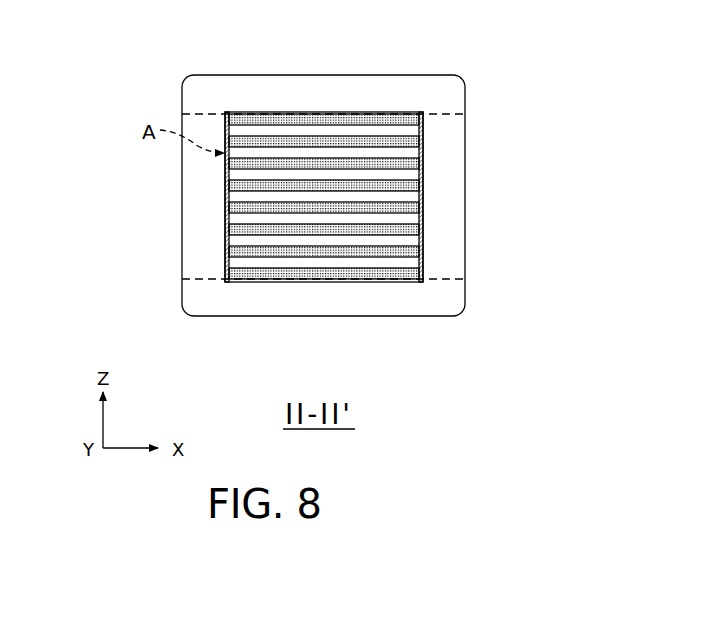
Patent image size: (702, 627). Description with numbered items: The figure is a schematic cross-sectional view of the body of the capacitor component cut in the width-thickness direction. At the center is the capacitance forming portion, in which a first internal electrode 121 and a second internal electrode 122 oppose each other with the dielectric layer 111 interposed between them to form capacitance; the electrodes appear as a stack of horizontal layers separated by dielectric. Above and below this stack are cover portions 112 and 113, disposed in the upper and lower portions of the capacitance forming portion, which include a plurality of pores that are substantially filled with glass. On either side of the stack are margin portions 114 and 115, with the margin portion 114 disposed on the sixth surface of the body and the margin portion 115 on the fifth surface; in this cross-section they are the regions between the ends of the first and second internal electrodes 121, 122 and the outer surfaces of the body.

The dielectric layer 111 is at (253, 130).
The cover portion 112 is at (310, 95).
The cover portion 113 is at (314, 303).
The margin portion 114 is at (203, 199).
The margin portion 115 is at (447, 204).
The first internal electrode 121 is at (370, 113).
The second internal electrode 122 is at (402, 132).